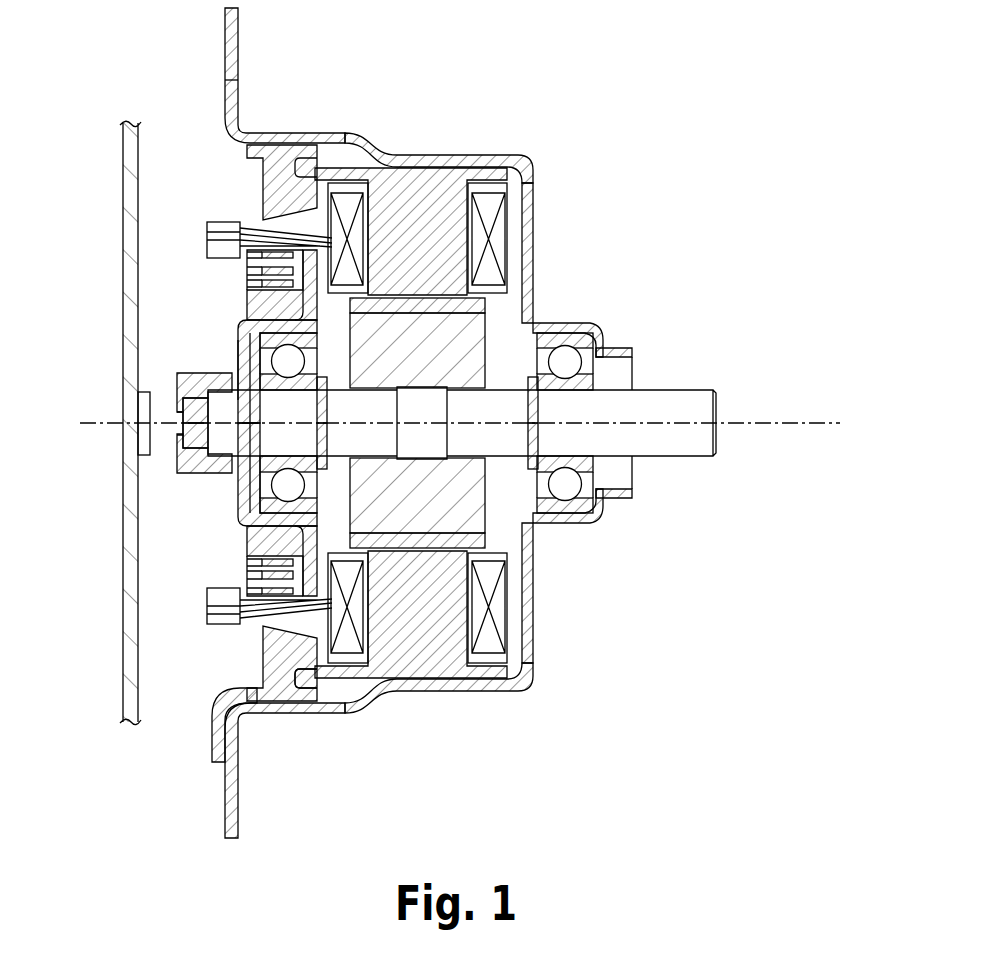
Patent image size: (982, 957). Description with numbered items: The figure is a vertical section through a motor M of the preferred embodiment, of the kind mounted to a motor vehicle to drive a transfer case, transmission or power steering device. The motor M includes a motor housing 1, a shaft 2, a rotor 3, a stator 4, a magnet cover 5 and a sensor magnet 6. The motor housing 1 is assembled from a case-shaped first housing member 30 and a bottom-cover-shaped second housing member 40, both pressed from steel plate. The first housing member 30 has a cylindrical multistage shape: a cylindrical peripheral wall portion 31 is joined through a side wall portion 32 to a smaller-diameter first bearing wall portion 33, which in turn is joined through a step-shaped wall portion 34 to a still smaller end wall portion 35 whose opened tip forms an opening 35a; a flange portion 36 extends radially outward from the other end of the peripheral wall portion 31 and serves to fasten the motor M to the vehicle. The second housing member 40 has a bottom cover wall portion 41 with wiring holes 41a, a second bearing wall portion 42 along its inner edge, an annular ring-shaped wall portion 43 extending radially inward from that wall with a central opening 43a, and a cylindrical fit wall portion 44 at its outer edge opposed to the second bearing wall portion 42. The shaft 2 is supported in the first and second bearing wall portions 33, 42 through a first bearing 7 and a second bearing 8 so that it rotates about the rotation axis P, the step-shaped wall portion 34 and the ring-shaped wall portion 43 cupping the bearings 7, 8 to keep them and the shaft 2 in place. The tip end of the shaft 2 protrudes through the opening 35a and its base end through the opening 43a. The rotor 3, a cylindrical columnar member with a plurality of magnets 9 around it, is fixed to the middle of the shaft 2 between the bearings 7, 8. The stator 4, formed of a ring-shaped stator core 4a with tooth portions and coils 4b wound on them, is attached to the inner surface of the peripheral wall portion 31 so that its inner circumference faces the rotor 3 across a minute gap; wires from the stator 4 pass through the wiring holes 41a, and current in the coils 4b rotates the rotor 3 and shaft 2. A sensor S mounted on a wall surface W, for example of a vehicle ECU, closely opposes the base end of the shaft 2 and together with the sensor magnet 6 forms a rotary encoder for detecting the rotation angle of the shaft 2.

The motor housing 1 is at (395, 48).
The shaft 2 is at (698, 392).
The rotor 3 is at (512, 307).
The stator 4 is at (494, 677).
The stator core 4a is at (443, 652).
The coils 4b is at (515, 636).
The magnet cover 5 is at (167, 366).
The sensor magnet 6 is at (185, 433).
The first bearing 7 is at (592, 381).
The second bearing 8 is at (258, 466).
The magnets 9 is at (483, 538).
The first housing member 30 is at (406, 103).
The peripheral wall portion 31 is at (450, 155).
The side wall portion 32 is at (535, 200).
The first bearing wall portion 33 is at (572, 323).
The step-shaped wall portion 34 is at (605, 346).
The end wall portion 35 is at (617, 499).
The opening 35a is at (624, 473).
The flange portion 36 is at (230, 20).
The second housing member 40 is at (285, 212).
The bottom cover wall portion 41 is at (307, 548).
The wiring holes 41a is at (300, 670).
The second bearing wall portion 42 is at (262, 302).
The annular ring-shaped wall portion 43 is at (245, 318).
The opening 43a is at (243, 344).
The fit wall portion 44 is at (260, 690).
The motor M is at (605, 70).
The rotation axis P is at (783, 428).
The sensor S is at (140, 405).
The wall surface W is at (124, 194).